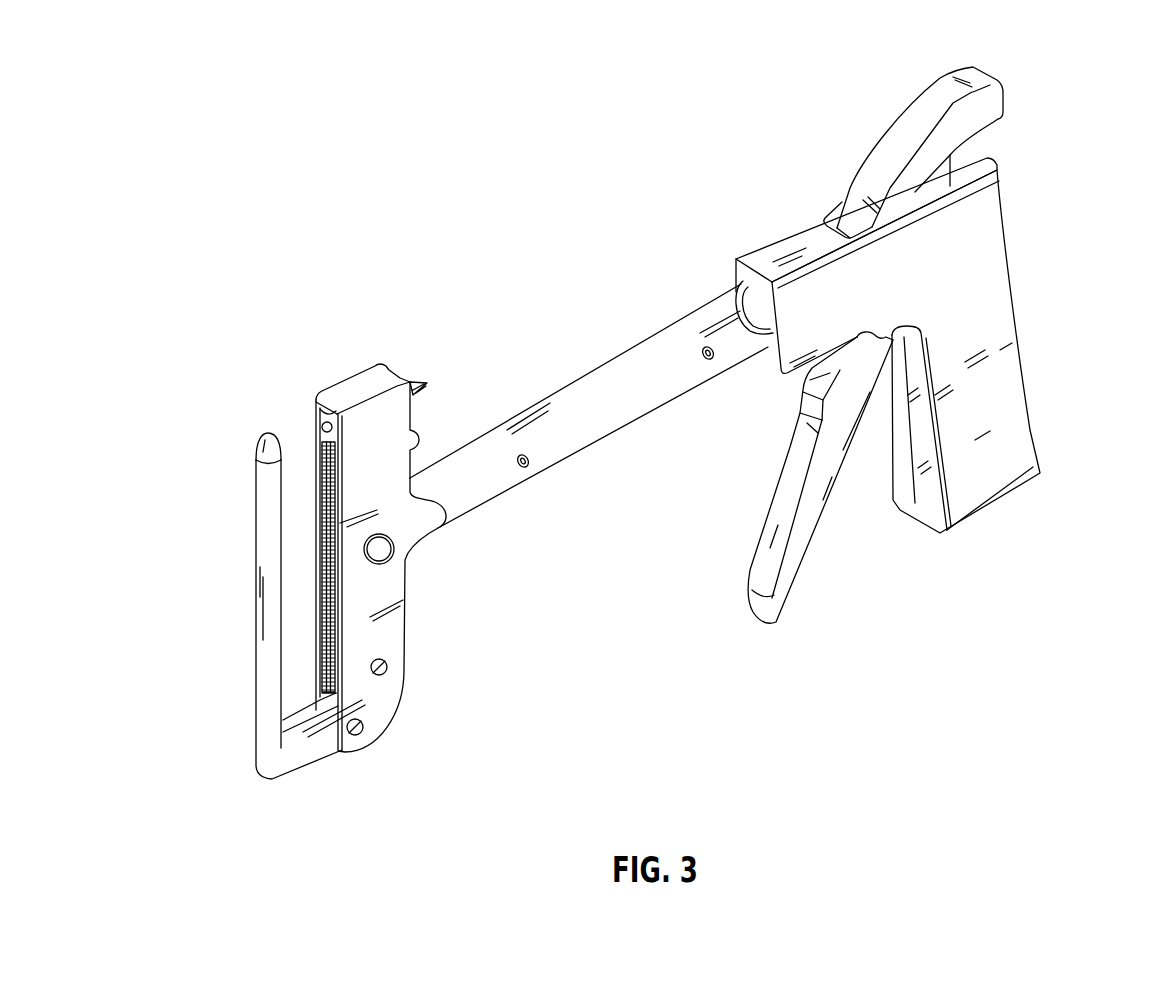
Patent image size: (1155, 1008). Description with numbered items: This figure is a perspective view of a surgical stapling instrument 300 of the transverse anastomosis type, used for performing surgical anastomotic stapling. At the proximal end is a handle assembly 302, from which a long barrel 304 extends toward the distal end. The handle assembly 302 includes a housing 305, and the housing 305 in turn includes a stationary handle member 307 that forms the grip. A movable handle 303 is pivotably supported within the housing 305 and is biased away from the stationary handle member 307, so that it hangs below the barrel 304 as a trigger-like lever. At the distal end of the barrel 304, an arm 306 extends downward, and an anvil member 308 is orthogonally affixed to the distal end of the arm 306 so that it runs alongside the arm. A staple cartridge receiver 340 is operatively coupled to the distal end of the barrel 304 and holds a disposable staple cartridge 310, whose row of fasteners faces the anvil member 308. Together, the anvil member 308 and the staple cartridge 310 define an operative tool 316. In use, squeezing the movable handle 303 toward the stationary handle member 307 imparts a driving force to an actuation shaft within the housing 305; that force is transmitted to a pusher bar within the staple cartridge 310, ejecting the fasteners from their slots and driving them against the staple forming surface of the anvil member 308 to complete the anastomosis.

The surgical stapling instrument 300 is at (530, 278).
The handle assembly 302 is at (1035, 262).
The movable handle 303 is at (783, 593).
The barrel 304 is at (610, 434).
The housing 305 is at (987, 232).
The arm 306 is at (398, 705).
The stationary handle member 307 is at (1013, 433).
The anvil member 308 is at (256, 563).
The staple cartridge 310 is at (320, 446).
The operative tool 316 is at (288, 400).
The staple cartridge receiver 340 is at (390, 623).